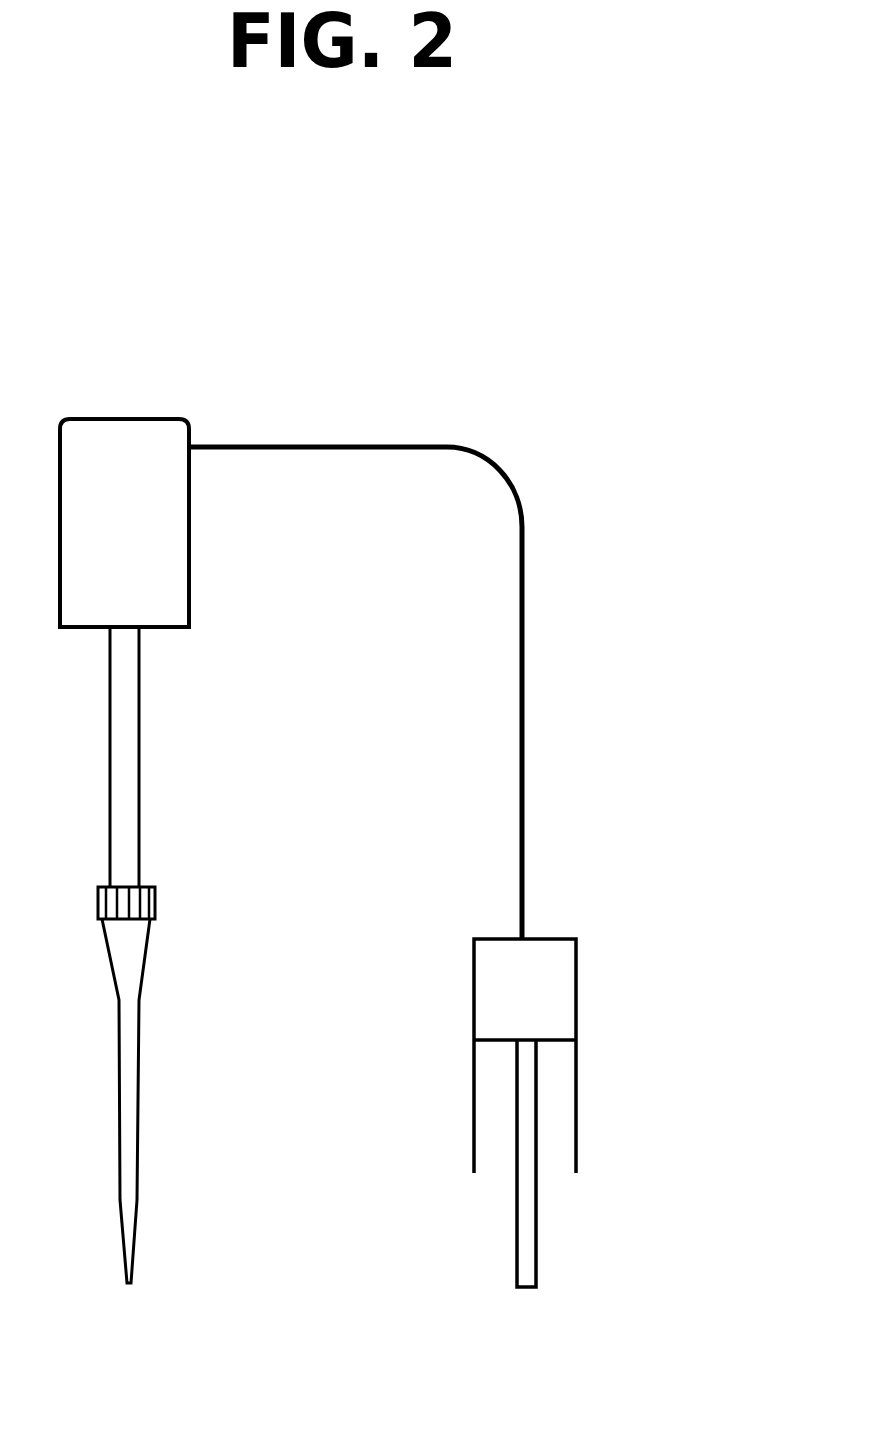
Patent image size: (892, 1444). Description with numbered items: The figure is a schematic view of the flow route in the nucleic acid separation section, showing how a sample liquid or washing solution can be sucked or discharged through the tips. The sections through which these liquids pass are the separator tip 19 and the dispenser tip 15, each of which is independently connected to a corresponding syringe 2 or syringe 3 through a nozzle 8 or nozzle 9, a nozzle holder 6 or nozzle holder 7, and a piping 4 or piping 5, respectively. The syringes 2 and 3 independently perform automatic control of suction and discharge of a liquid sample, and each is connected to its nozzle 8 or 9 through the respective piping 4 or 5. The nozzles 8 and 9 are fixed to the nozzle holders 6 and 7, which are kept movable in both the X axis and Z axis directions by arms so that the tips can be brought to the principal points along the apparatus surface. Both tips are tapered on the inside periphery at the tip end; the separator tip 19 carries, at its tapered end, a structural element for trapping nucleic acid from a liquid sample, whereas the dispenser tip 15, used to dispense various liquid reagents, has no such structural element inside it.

The nozzle holder 6 is at (124, 426).
The nozzle holder 7 is at (113, 430).
The piping 4 is at (476, 653).
The piping 5 is at (525, 552).
The syringe 2 is at (638, 1055).
The syringe 3 is at (565, 982).
The nozzle 8 is at (230, 773).
The nozzle 9 is at (128, 750).
The separator tip 19 is at (234, 1101).
The dispenser tip 15 is at (127, 1100).